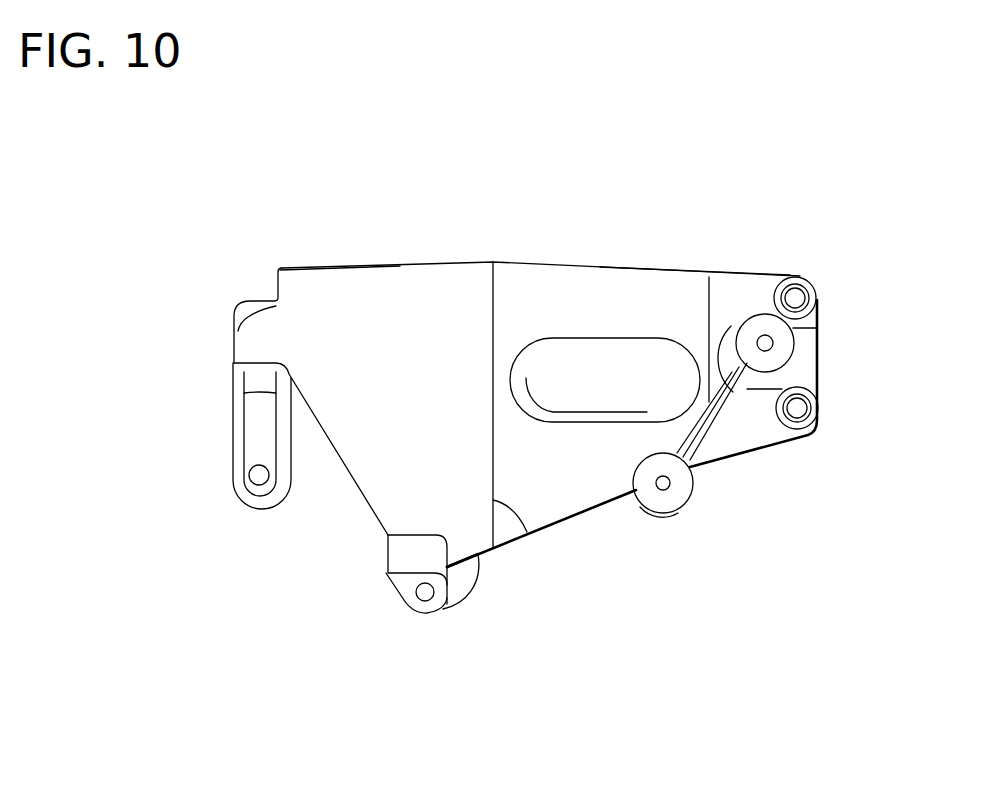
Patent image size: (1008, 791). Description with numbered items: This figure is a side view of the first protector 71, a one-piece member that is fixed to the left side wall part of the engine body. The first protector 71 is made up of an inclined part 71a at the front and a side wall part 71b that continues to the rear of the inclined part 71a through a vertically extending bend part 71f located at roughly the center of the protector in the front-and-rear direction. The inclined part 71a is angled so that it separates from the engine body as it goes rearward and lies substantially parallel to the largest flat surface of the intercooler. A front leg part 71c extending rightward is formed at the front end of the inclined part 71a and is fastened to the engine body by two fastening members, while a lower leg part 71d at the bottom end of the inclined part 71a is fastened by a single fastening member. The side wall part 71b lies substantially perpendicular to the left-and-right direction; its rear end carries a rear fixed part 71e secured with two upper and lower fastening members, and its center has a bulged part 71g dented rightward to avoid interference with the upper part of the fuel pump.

The first protector 71 is at (797, 222).
The inclined part 71a is at (397, 282).
The side wall part 71b is at (657, 286).
The front leg part 71c is at (230, 392).
The lower leg part 71d is at (443, 607).
The rear fixed part 71e is at (808, 359).
The bend part 71f is at (527, 533).
The bulged part 71g is at (561, 350).